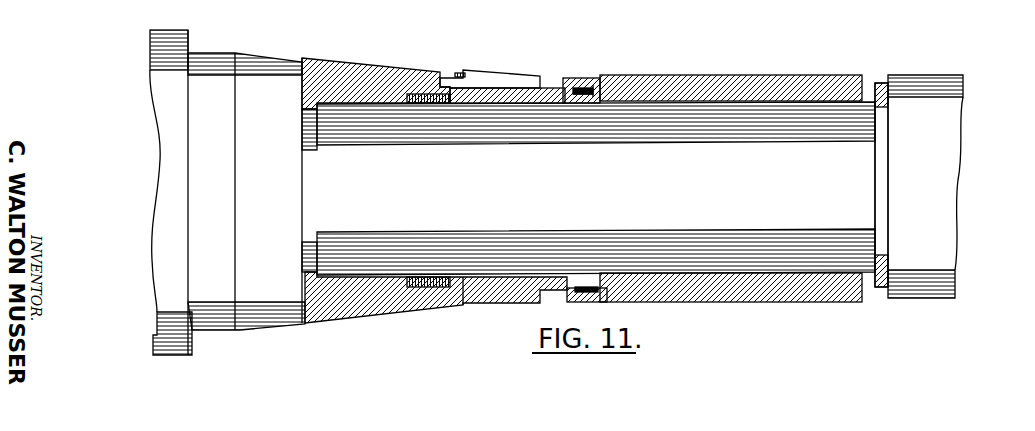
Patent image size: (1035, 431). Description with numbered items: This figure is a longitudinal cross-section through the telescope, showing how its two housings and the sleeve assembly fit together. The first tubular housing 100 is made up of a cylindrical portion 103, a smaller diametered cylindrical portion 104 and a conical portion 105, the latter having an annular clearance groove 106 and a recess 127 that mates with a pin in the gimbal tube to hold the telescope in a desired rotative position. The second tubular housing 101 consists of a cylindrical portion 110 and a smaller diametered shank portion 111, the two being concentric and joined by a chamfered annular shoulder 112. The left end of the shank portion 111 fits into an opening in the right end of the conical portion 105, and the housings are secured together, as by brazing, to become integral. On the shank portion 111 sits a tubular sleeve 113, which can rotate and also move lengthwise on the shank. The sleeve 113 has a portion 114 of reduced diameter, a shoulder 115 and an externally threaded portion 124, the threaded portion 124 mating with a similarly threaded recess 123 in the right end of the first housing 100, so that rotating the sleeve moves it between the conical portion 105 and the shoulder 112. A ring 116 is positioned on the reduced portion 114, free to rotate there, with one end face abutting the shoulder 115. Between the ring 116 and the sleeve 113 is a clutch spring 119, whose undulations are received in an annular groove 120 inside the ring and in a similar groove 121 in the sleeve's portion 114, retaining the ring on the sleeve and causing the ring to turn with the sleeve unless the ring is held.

The first tubular housing 100 is at (153, 181).
The second tubular housing 101 is at (963, 117).
The cylindrical portion 103 is at (170, 40).
The smaller diametered cylindrical portion 104 is at (203, 65).
The conical portion 105 is at (280, 327).
The annular clearance groove 106 is at (412, 312).
The cylindrical portion 110 is at (928, 85).
The shank portion 111 is at (832, 142).
The chamfered annular shoulder 112 is at (875, 176).
The tubular sleeve 113 is at (754, 75).
The portion of reduced diameter 114 is at (574, 88).
The shoulder 115 is at (598, 302).
The ring 116 is at (565, 84).
The clutch spring 119 is at (592, 83).
The annular groove 120 is at (593, 95).
The groove 121 is at (565, 305).
The threaded recess 123 is at (418, 93).
The externally threaded portion 124 is at (547, 90).
The recess 127 is at (472, 78).